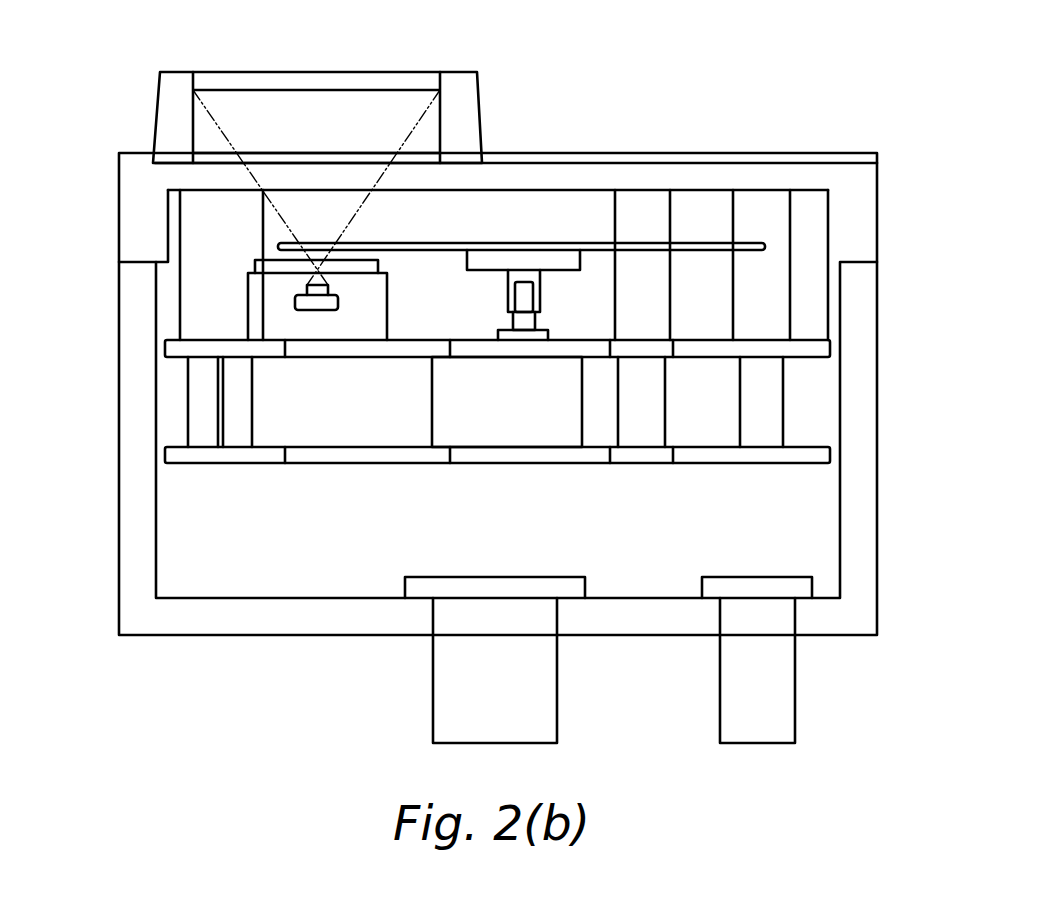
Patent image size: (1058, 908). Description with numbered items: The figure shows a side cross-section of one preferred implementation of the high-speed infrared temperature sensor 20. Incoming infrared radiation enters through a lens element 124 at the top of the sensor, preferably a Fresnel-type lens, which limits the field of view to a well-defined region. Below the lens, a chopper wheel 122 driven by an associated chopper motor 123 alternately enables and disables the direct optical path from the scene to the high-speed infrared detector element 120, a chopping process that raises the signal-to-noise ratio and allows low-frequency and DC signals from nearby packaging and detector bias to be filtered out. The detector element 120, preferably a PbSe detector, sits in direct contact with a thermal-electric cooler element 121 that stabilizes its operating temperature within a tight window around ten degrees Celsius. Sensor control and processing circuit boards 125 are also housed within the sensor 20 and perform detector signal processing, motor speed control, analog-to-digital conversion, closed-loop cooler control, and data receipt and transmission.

The high-speed infrared temperature sensor 20 is at (877, 341).
The high-speed infrared detector element 120 is at (307, 286).
The thermal-electric (TE) cooler element 121 is at (295, 303).
The chopper wheel 122 is at (556, 243).
The chopper motor 123 is at (432, 408).
The lens element 124 is at (155, 110).
The sensor control and processing circuit boards 125 is at (583, 447).